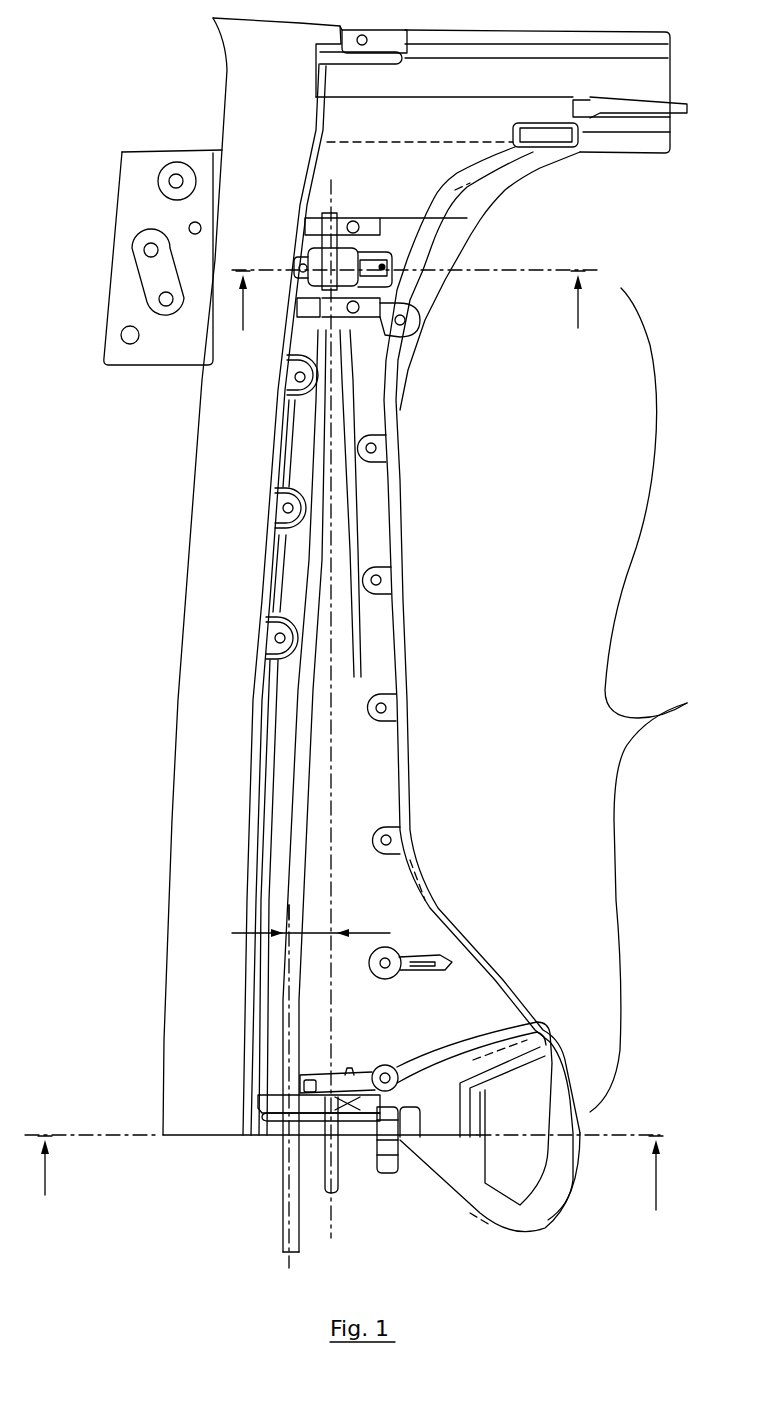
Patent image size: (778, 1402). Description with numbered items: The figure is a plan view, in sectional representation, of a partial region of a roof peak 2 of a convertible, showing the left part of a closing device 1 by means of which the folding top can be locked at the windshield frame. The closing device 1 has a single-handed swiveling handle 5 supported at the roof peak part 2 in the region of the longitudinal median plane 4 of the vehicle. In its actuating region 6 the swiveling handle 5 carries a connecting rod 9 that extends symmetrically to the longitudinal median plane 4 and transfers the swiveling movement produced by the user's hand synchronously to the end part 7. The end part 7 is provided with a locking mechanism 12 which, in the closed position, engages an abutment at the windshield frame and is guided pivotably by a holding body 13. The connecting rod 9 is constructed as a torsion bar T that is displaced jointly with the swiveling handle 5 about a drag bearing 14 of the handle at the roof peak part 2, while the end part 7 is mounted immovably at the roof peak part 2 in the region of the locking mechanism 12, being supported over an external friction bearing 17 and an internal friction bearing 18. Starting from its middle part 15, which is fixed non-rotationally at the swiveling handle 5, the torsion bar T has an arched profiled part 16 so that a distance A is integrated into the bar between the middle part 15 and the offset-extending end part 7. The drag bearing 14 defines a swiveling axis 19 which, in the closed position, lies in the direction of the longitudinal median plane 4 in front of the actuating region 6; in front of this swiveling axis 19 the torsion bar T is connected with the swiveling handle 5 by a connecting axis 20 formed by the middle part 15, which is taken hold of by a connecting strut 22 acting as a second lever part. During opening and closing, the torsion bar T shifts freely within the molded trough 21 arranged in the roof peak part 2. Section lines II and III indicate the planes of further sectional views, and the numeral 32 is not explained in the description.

The closing device 1 is at (511, 571).
The roof peak 2 is at (195, 862).
The longitudinal median plane 4 is at (115, 1133).
The single-handed swiveling handle 5 is at (570, 1205).
The actuating region 6 is at (437, 1153).
The end part 7 is at (350, 362).
The connecting rod 9 is at (326, 821).
The locking mechanism 12 is at (345, 267).
The holding body 13 is at (370, 253).
The drag bearing 14 is at (387, 1050).
The middle part 15 is at (285, 997).
The arched profiled part 16 is at (306, 691).
The external friction bearing 17 is at (345, 318).
The internal friction bearing 18 is at (338, 216).
The swiveling axis 19 is at (333, 1039).
The connecting axis 20 is at (290, 1268).
The molded trough 21 is at (373, 766).
The connecting strut 22 is at (305, 1117).
The upper bracket 32 is at (332, 202).
The distance A is at (368, 934).
The torsion bar T is at (285, 1160).
The section II- II is at (350, 1189).
The section III- III is at (407, 310).